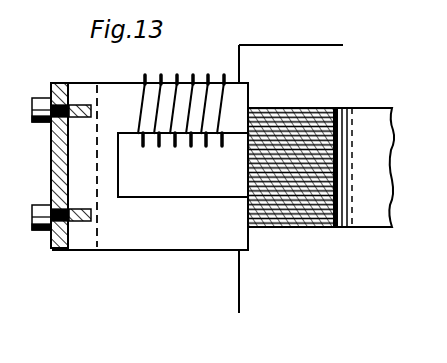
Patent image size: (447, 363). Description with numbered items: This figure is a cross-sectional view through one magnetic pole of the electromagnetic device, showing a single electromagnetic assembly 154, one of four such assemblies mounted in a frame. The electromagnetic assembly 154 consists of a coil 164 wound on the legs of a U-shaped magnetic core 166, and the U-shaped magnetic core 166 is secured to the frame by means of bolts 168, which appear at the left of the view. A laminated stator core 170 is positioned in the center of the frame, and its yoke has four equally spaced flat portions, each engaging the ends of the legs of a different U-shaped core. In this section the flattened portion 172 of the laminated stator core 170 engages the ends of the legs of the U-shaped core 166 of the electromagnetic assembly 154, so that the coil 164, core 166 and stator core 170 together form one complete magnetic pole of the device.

The electromagnetic assembly 154 is at (117, 251).
The coil 164 is at (176, 73).
The U-shaped magnetic core 166 is at (105, 98).
The bolts 168 is at (42, 115).
The laminated stator core 170 is at (296, 228).
The flattened portion 172 is at (279, 107).